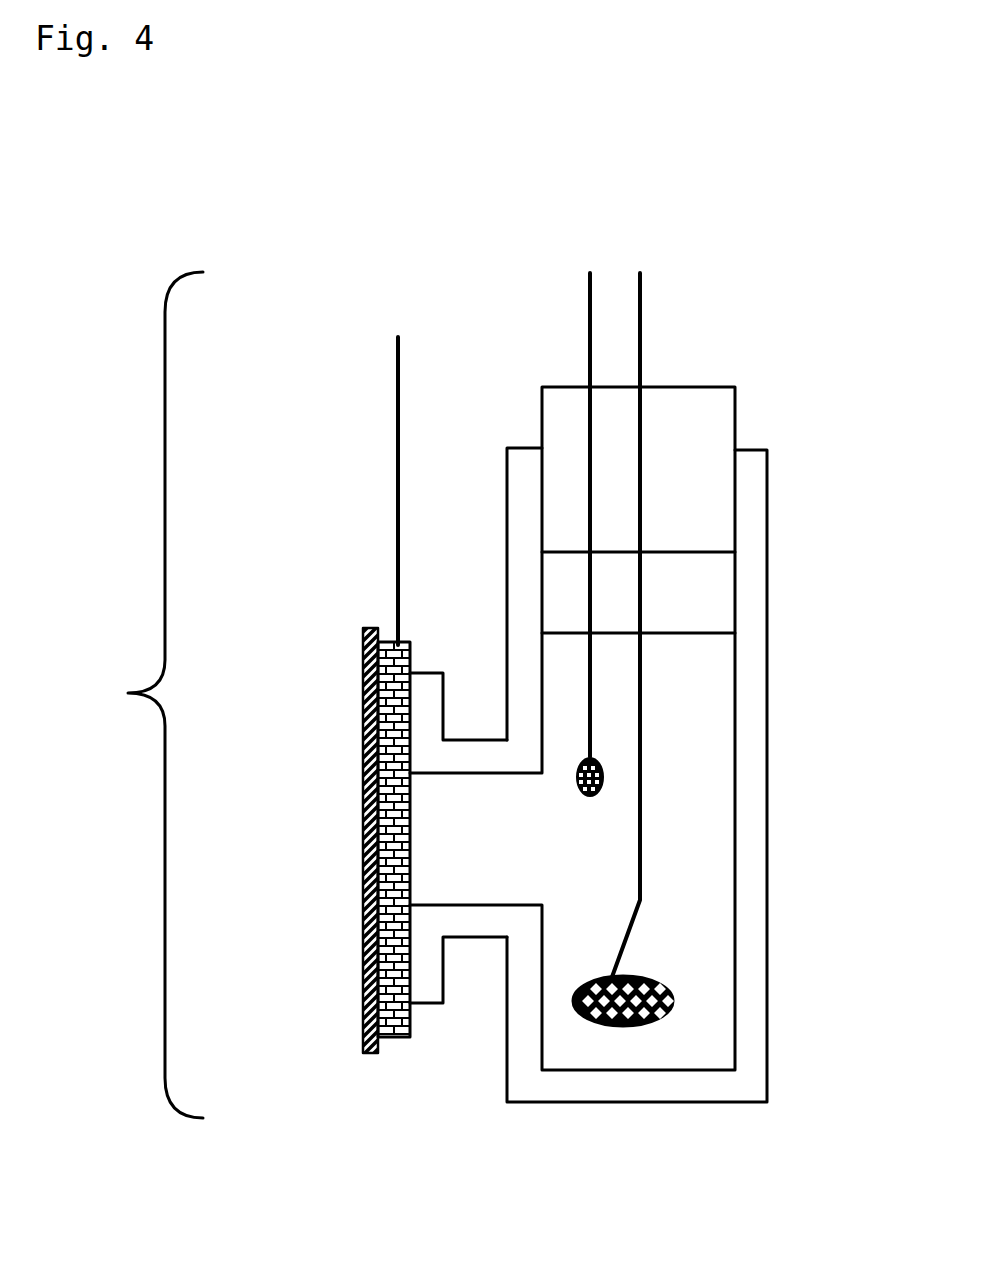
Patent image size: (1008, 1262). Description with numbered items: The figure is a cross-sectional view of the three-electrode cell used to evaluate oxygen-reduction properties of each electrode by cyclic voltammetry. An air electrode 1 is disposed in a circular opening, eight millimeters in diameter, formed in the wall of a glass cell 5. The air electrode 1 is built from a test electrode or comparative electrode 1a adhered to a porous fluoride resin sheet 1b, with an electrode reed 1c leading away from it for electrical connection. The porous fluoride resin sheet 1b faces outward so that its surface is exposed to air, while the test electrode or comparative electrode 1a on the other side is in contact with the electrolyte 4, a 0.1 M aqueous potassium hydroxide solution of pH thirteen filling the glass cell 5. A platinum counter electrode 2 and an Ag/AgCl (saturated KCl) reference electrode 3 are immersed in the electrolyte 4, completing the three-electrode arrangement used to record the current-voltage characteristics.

The air electrode 1 is at (238, 691).
The test electrode or comparative electrode 1a is at (363, 1037).
The porous fluoride resin sheet 1b is at (365, 662).
The electrode reed 1c is at (397, 397).
The counter electrode 2 is at (640, 338).
The reference electrode 3 is at (591, 335).
The electrolyte 4 is at (688, 880).
The glass cell 5 is at (752, 760).